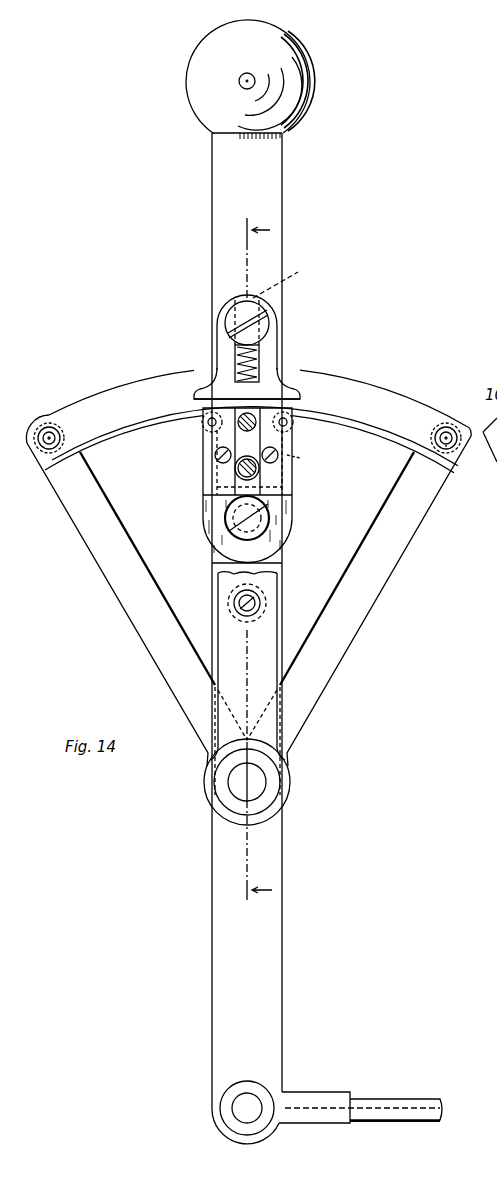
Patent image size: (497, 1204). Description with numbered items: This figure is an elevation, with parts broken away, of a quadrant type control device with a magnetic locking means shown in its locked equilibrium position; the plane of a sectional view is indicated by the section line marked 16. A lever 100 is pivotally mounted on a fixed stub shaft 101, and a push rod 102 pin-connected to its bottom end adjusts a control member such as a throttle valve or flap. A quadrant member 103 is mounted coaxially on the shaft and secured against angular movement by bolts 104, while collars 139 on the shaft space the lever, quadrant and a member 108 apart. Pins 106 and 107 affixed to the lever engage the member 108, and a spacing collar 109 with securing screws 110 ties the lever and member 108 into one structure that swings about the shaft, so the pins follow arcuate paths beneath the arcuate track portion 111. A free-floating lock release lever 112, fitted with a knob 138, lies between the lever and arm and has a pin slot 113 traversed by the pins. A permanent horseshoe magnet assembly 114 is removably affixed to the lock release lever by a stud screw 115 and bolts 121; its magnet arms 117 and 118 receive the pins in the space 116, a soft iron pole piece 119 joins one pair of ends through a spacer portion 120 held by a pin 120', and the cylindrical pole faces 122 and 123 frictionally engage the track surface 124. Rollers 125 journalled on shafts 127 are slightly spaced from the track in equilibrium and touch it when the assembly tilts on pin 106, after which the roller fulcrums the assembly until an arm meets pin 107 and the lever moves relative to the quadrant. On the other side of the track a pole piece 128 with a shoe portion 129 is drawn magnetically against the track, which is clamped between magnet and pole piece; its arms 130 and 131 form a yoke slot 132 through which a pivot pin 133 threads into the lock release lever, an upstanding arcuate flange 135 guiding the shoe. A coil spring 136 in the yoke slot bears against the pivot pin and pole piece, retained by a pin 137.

The lever 100 is at (212, 572).
The fixed stub shaft 101 is at (232, 782).
The push rod 102 is at (373, 1100).
The quadrant member 103 is at (100, 386).
The bolts 104 is at (43, 430).
The pin 106 is at (287, 444).
The pin 107 is at (287, 488).
The member 108 is at (265, 632).
The spacing collar 109 is at (228, 595).
The securing screws 110 is at (238, 607).
The arcuate track portion 111 is at (368, 425).
The lock release lever 112 is at (225, 162).
The pin slot 113 is at (293, 458).
The permanent horseshoe magnet assembly 114 is at (197, 523).
The stud screw 115 is at (283, 540).
The space 116 is at (223, 441).
The magnet arm 117 is at (207, 464).
The magnet arm 118 is at (290, 504).
The soft iron pole piece 119 is at (287, 520).
The spacer portion 120 is at (222, 484).
The pin 120' is at (225, 501).
The bolts 121 is at (218, 454).
The pole face 122 is at (203, 392).
The pole face 123 is at (286, 396).
The track surface 124 is at (133, 432).
The roller 125 is at (196, 416).
The shaft 127 is at (207, 424).
The pole piece 128 is at (210, 371).
The shoe portion 129 is at (312, 373).
The arm 130 is at (225, 320).
The arm 131 is at (270, 327).
The yoke slot 132 is at (262, 338).
The pivot pin 133 is at (294, 280).
The upstanding arcuate flange 135 is at (385, 398).
The coil spring 136 is at (250, 356).
The pin 137 is at (235, 362).
The knob 138 is at (297, 82).
The collars 139 is at (273, 785).
The section line 16 is at (250, 560).